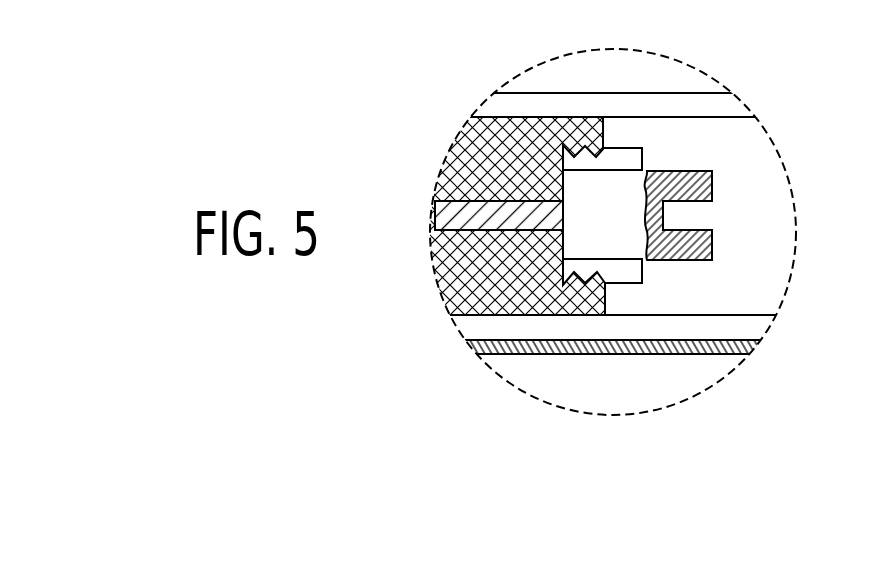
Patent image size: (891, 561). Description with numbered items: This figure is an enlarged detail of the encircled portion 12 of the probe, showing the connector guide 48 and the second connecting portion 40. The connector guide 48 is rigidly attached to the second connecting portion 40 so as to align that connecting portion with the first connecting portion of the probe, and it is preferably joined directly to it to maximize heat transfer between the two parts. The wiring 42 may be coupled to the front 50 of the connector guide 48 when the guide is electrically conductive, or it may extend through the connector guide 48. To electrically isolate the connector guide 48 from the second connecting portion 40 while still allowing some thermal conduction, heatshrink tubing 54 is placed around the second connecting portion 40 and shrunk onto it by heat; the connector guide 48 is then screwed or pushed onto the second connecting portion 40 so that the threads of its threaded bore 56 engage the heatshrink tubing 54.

The housing detail region 12 is at (618, 93).
The second connecting portion 40 is at (712, 186).
The wiring 42 is at (437, 212).
The connector guide 48 is at (462, 278).
The front 50 is at (605, 134).
The heatshrink tubing 54 is at (642, 281).
The threaded bore 56 is at (605, 303).